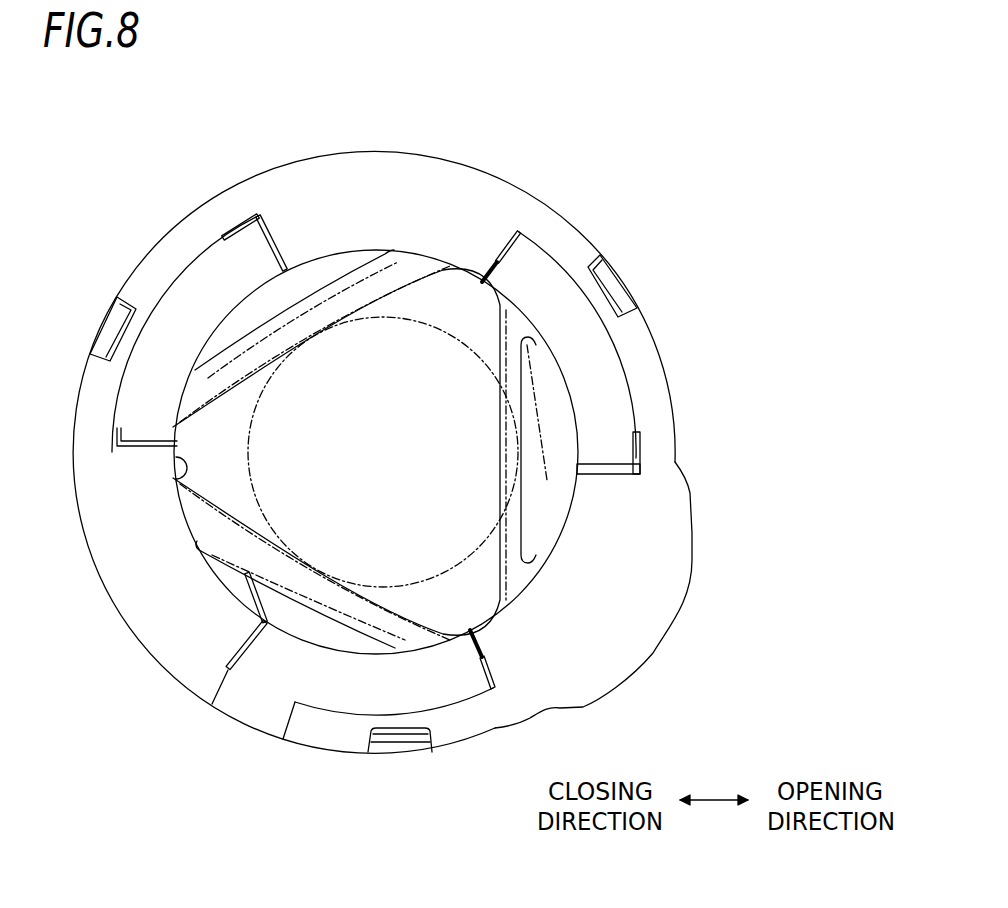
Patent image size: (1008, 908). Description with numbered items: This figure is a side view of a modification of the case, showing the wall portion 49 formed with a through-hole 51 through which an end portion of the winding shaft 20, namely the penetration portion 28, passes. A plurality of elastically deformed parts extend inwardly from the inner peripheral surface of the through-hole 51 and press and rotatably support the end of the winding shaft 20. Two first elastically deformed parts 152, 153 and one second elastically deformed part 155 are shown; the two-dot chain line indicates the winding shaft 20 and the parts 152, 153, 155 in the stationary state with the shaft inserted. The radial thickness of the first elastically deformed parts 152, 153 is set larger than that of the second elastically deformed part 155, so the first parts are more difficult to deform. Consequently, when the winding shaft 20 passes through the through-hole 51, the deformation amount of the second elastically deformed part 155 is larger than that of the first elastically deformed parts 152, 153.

The wall portion 49 is at (485, 183).
The through-hole 51 is at (175, 477).
The winding shaft 20 is at (470, 572).
The penetration portion 28 is at (398, 509).
The first elastically deformed part 152 is at (313, 288).
The first elastically deformed part 153 is at (247, 565).
The second elastically deformed part 155 is at (527, 507).